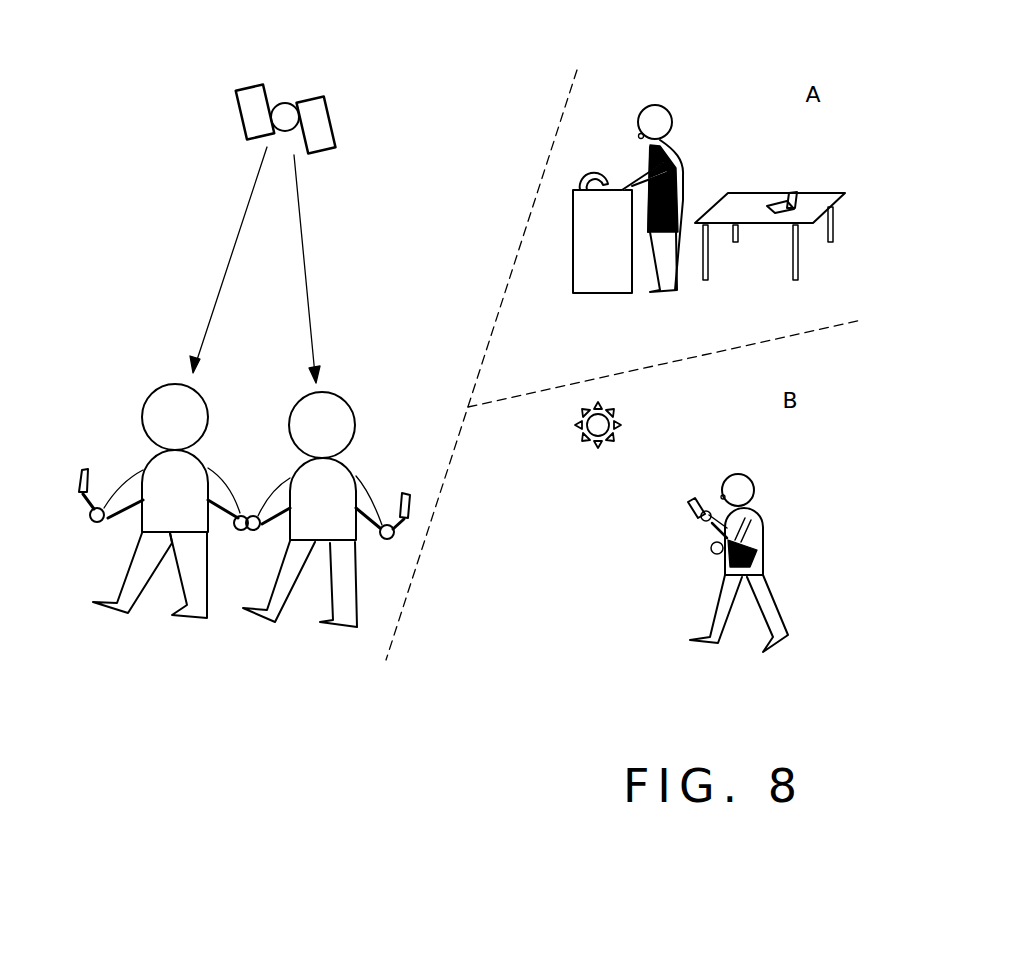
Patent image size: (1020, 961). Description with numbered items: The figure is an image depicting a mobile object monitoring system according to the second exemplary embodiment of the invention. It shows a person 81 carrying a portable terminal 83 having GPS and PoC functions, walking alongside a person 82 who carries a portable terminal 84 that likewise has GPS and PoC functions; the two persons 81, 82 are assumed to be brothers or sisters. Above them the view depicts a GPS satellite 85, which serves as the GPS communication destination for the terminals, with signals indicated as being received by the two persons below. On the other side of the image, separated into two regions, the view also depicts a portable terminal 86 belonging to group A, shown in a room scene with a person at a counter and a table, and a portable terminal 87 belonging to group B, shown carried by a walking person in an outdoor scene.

The person 81 is at (148, 392).
The person 82 is at (350, 400).
The portable terminal 83 is at (77, 468).
The portable terminal 84 is at (404, 490).
The GPS satellite 85 is at (317, 97).
The portable terminal 86 is at (780, 204).
The portable terminal 87 is at (690, 507).